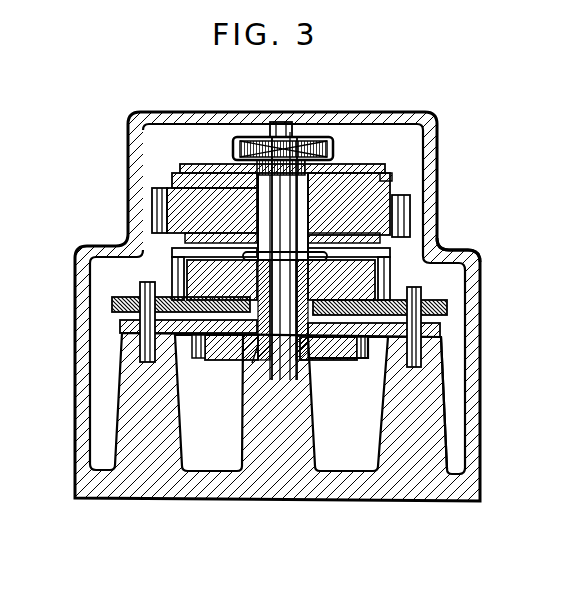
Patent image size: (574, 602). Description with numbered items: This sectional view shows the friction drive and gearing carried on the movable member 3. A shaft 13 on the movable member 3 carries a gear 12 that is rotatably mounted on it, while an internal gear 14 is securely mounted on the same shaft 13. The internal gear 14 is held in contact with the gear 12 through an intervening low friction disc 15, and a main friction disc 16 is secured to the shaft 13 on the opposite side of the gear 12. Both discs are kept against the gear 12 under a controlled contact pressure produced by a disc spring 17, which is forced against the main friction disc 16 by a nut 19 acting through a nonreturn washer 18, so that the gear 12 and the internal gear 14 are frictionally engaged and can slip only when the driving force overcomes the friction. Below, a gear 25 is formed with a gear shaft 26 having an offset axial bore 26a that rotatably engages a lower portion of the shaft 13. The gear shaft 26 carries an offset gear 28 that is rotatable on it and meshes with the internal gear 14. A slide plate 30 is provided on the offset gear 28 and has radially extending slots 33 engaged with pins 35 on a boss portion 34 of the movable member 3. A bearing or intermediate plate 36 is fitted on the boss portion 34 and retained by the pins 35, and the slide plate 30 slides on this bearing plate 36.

The movable member 3 is at (407, 485).
The gear 12 is at (410, 212).
The shaft 13 is at (267, 197).
The internal gear 14 is at (392, 270).
The low friction disc 15 is at (375, 243).
The main friction disc 16 is at (393, 190).
The disc spring 17 is at (363, 166).
The nonreturn washer 18 is at (333, 143).
The nut 19 is at (312, 142).
The gear 25 is at (348, 358).
The gear shaft 26 is at (265, 340).
The offset axial bore 26a is at (257, 363).
The offset gear 28 is at (203, 280).
The slide plate 30 is at (417, 306).
The radially extending slots 33 is at (430, 318).
The boss portion 34 is at (423, 398).
The pins 35 is at (420, 340).
The bearing plate 36 is at (120, 326).